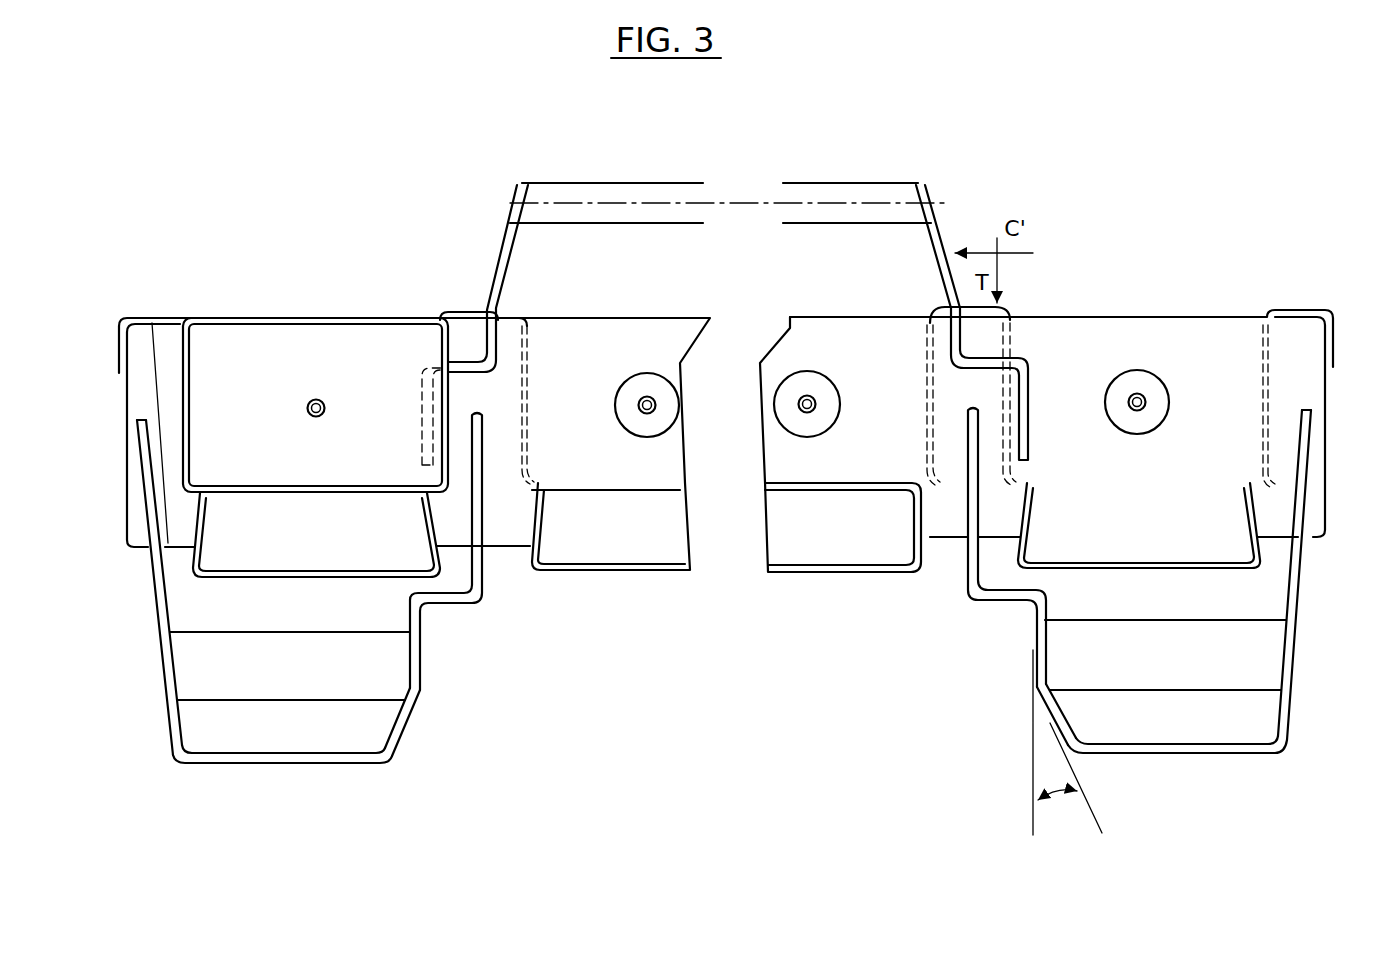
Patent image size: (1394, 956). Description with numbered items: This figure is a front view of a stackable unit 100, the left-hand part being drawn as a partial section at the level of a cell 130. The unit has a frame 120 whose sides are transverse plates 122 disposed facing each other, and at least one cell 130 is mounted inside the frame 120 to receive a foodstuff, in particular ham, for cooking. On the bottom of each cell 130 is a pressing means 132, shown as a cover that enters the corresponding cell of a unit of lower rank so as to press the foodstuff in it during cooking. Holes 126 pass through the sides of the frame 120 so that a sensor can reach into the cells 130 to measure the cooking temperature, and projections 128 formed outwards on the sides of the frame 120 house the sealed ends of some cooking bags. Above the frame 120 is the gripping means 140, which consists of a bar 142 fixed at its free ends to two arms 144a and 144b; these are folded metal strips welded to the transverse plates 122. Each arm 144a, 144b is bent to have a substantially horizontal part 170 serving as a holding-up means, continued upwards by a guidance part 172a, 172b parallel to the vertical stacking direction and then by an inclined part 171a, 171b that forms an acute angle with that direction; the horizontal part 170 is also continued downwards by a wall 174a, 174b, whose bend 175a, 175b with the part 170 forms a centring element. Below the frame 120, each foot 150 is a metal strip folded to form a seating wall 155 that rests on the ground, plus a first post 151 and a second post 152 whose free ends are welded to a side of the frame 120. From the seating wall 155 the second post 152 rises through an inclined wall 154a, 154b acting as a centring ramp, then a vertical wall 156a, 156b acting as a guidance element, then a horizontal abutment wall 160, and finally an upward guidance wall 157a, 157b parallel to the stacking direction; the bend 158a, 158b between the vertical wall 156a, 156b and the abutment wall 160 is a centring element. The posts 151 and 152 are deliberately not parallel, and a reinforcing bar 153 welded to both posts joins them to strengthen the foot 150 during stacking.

The stackable unit 100 is at (295, 253).
The frame 120 is at (1330, 390).
The transverse plate 122 is at (1295, 357).
The hole 126 is at (1167, 380).
The projection 128 is at (1150, 392).
The cell 130 is at (193, 357).
The pressing means 132 is at (372, 577).
The gripping means 140 is at (723, 267).
The bar 142 is at (617, 183).
The arm 144a is at (921, 183).
The arm 144b is at (524, 183).
The foot 150 is at (707, 574).
The first post 151 is at (150, 594).
The second post 152 is at (500, 567).
The reinforcing bar 153 is at (320, 700).
The inclined wall 154a is at (1050, 723).
The inclined wall 154b is at (403, 735).
The seating wall 155 is at (238, 770).
The vertical wall 156a is at (1037, 660).
The vertical wall 156b is at (425, 665).
The guidance wall 157a is at (967, 477).
The guidance wall 157b is at (483, 518).
The bend 158a is at (1005, 598).
The bend 158b is at (472, 598).
The abutment wall 160 is at (428, 622).
The horizontal part 170 is at (455, 528).
The inclined part 171a is at (950, 250).
The inclined part 171b is at (503, 247).
The guidance part 172a is at (1012, 320).
The guidance part 172b is at (476, 325).
The wall 174a is at (1030, 437).
The wall 174b is at (420, 434).
The bend 175a is at (1030, 368).
The bend 175b is at (425, 370).